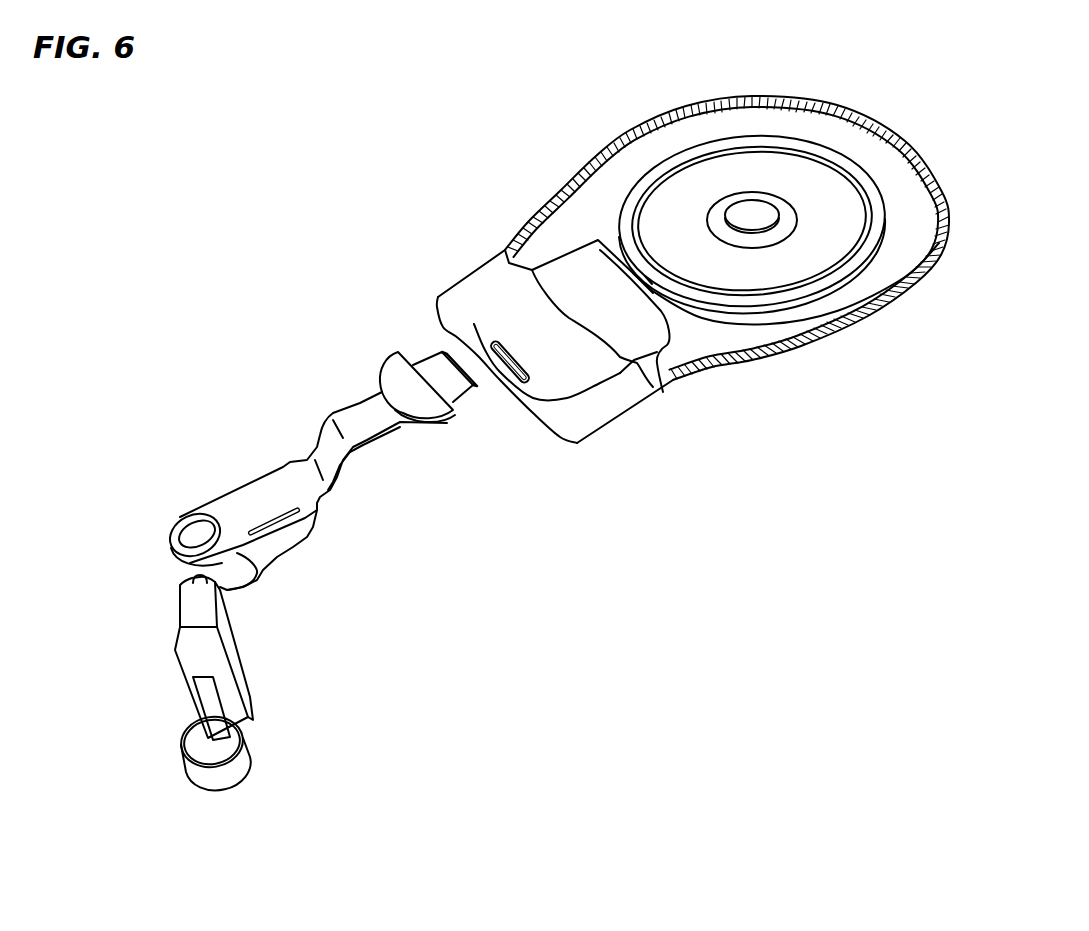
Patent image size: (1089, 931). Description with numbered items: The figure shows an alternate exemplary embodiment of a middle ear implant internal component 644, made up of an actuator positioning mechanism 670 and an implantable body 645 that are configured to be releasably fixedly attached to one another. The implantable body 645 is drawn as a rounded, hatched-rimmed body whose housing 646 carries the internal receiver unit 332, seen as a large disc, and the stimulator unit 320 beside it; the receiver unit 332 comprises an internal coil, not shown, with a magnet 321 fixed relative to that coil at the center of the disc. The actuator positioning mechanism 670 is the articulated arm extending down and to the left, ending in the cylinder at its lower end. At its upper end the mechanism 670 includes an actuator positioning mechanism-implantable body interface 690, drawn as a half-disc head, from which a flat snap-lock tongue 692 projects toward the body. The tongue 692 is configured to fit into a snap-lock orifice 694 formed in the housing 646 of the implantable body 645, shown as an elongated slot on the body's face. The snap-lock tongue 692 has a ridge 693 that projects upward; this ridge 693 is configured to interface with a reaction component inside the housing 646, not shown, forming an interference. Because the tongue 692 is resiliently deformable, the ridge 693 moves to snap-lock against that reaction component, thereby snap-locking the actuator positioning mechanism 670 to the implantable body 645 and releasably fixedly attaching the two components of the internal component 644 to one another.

The middle ear implant internal component 644 is at (1039, 797).
The implantable body 645 is at (620, 106).
The housing 646 is at (597, 423).
The stimulator unit 320 is at (653, 350).
The magnet 321 is at (753, 217).
The internal receiver unit 332 is at (870, 257).
The snap-lock orifice 694 is at (503, 355).
The actuator positioning mechanism 670 is at (310, 648).
The actuator positioning mechanism-implantable body interface 690 is at (397, 382).
The snap-lock tongue 692 is at (443, 387).
The ridge 693 is at (452, 357).